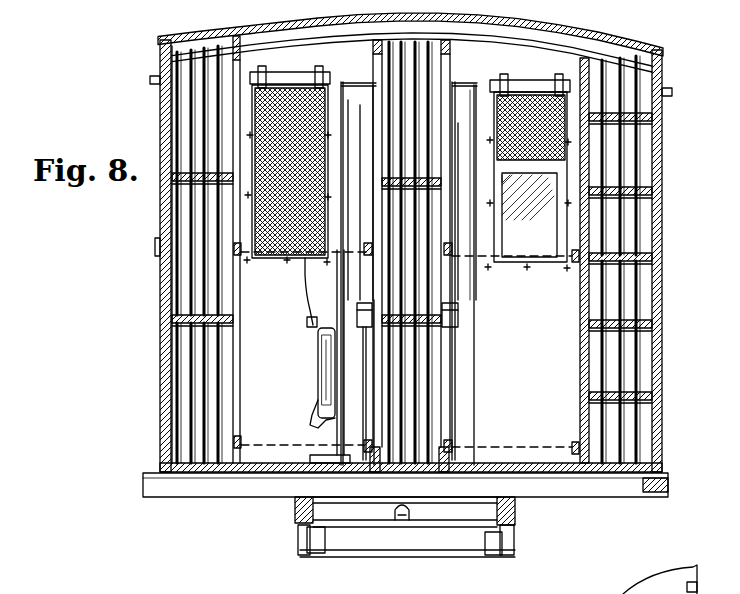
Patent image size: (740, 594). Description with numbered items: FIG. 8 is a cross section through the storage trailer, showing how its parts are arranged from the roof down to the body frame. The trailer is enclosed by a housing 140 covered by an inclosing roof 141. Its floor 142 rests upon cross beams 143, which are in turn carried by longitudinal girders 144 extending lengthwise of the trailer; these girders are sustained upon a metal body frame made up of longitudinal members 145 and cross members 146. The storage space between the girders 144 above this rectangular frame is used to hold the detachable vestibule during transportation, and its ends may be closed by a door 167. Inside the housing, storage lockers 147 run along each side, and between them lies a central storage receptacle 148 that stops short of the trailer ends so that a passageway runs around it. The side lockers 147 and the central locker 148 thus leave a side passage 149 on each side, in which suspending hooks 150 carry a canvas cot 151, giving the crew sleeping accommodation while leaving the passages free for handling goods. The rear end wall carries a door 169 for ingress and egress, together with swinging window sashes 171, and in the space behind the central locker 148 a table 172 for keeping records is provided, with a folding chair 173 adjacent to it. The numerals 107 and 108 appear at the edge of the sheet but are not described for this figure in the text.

The housing 140 is at (158, 230).
The inclosing roof 141 is at (343, 24).
The floor 142 is at (258, 476).
The cross beams 143 is at (608, 492).
The longitudinal girders 144 is at (298, 508).
The longitudinal members 145 is at (298, 545).
The cross members 146 is at (425, 553).
The storage lockers 147 is at (195, 122).
The storage receptacle 148 is at (413, 387).
The side passage 149 is at (252, 375).
The suspending hooks 150 is at (370, 252).
The canvas cot 151 is at (278, 445).
The door 167 is at (455, 540).
The door 169 is at (467, 145).
The swinging window sashes 171 is at (455, 200).
The table 172 is at (458, 318).
The folding chair 173 is at (318, 350).
The adjacent figure part 107 is at (650, 572).
The adjacent figure part 108 is at (726, 586).